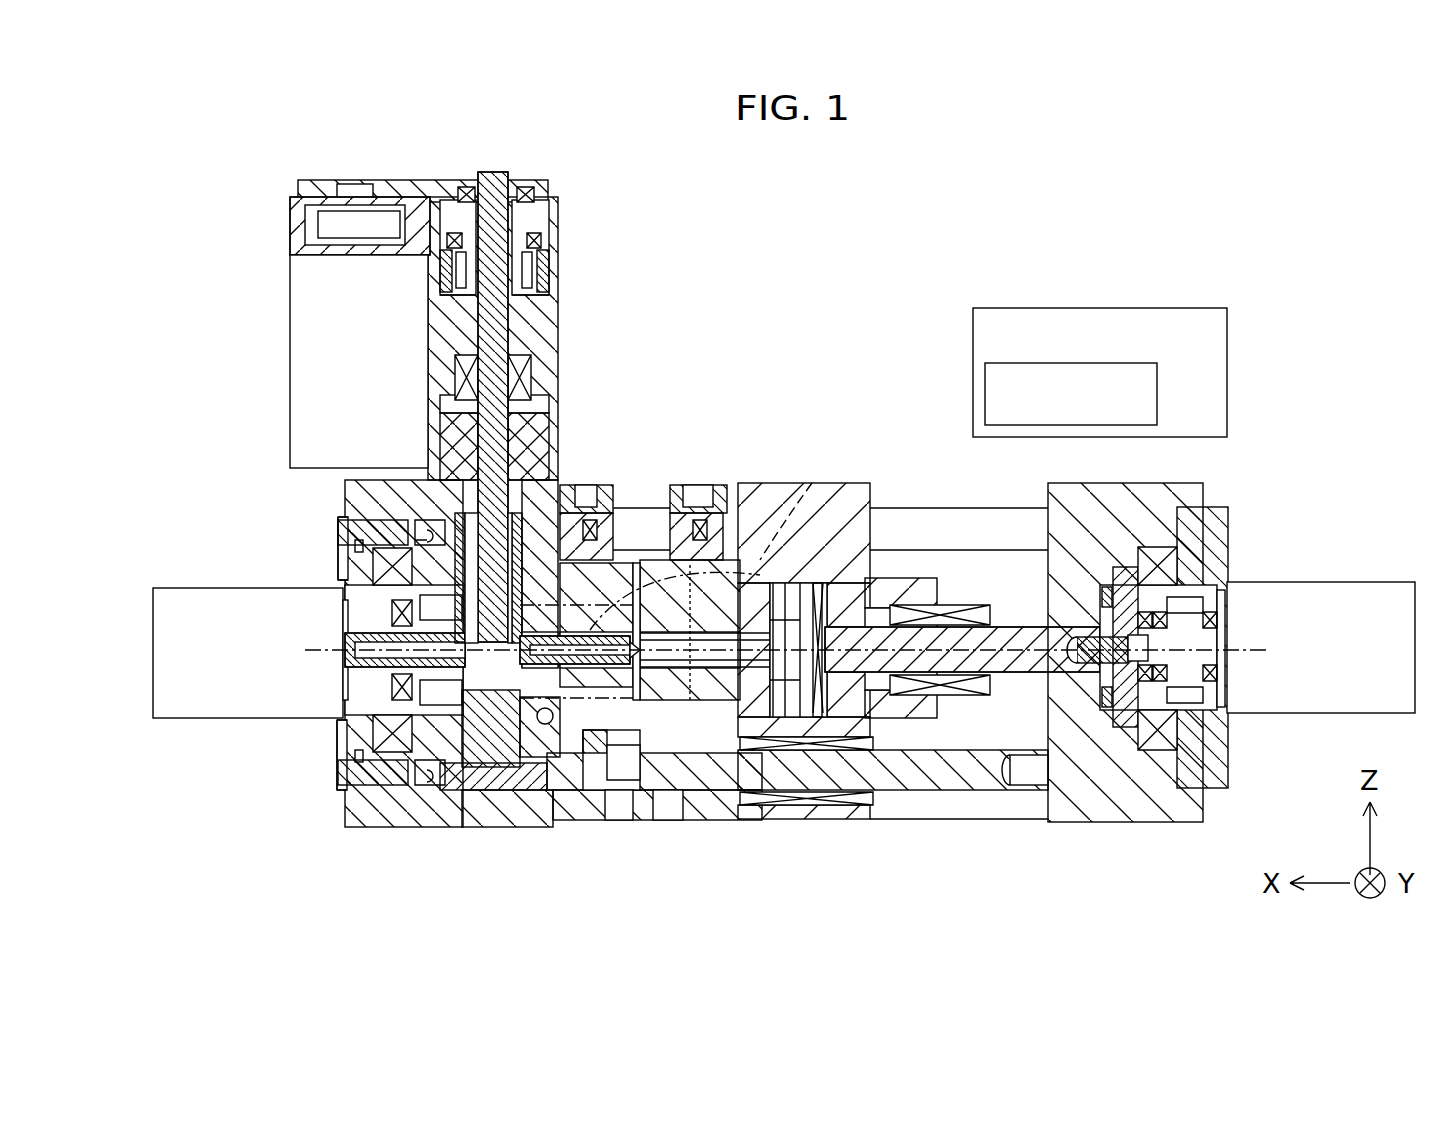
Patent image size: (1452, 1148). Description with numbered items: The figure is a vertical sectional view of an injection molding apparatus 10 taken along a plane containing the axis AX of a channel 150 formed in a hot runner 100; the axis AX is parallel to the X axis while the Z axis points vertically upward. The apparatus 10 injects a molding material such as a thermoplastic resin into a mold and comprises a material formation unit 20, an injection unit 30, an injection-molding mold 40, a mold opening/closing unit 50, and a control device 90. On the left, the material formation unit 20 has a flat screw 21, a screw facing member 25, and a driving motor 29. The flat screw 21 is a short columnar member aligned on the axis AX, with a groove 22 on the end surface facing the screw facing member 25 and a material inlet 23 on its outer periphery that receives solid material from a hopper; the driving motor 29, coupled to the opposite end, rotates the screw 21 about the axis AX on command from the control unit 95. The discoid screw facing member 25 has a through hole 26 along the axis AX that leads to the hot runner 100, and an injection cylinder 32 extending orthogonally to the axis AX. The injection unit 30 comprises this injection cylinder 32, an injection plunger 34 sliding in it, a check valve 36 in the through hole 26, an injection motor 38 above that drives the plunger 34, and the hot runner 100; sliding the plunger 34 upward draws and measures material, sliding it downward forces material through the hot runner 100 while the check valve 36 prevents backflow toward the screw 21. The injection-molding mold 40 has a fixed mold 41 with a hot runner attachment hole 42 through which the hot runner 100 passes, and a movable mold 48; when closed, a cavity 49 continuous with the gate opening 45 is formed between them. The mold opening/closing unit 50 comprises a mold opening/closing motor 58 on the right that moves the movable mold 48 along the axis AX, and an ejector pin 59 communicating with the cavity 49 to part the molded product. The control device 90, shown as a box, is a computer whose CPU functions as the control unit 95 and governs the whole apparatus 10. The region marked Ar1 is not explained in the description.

The injection molding apparatus 10 is at (1037, 220).
The material formation unit 20 is at (228, 524).
The flat screw 21 is at (378, 563).
The groove 22 is at (395, 745).
The material inlet 23 is at (400, 500).
The screw facing member 25 is at (505, 720).
The through hole 26 is at (535, 770).
The driving motor 29 is at (228, 712).
The injection unit 30 is at (620, 335).
The injection cylinder 32 is at (510, 470).
The injection plunger 34 is at (535, 420).
The check valve 36 is at (560, 500).
The injection motor 38 is at (302, 352).
The injection-molding mold 40 is at (630, 532).
The fixed mold 41 is at (612, 560).
The hot runner attachment hole 42 is at (768, 490).
The gate opening 45 is at (640, 700).
The movable mold 48 is at (668, 560).
The cavity 49 is at (690, 705).
The mold opening/closing unit 50 is at (893, 604).
The mold opening/closing motor 58 is at (1282, 605).
The ejector pin 59 is at (735, 705).
The control device 90 is at (1100, 355).
The control unit 95 is at (1157, 393).
The hot runner 100 is at (634, 665).
The channel 150 is at (597, 700).
The axis AX is at (325, 650).
The area Ar1 is at (812, 483).